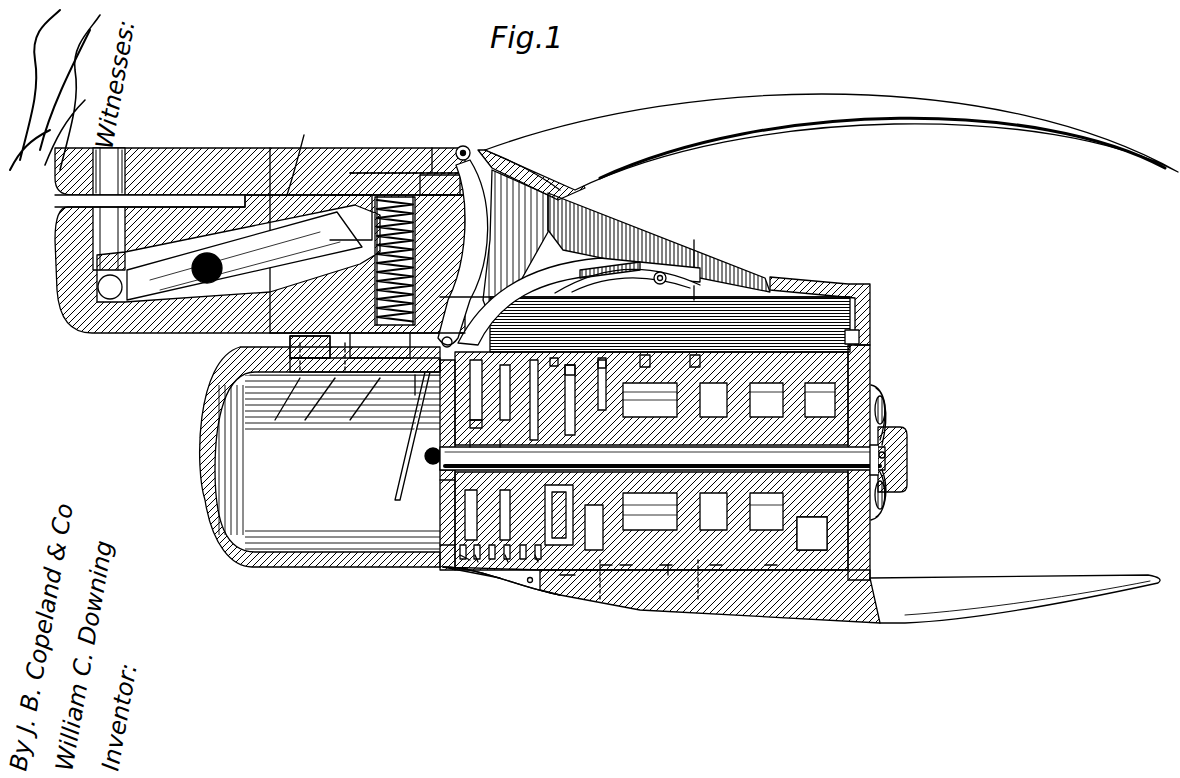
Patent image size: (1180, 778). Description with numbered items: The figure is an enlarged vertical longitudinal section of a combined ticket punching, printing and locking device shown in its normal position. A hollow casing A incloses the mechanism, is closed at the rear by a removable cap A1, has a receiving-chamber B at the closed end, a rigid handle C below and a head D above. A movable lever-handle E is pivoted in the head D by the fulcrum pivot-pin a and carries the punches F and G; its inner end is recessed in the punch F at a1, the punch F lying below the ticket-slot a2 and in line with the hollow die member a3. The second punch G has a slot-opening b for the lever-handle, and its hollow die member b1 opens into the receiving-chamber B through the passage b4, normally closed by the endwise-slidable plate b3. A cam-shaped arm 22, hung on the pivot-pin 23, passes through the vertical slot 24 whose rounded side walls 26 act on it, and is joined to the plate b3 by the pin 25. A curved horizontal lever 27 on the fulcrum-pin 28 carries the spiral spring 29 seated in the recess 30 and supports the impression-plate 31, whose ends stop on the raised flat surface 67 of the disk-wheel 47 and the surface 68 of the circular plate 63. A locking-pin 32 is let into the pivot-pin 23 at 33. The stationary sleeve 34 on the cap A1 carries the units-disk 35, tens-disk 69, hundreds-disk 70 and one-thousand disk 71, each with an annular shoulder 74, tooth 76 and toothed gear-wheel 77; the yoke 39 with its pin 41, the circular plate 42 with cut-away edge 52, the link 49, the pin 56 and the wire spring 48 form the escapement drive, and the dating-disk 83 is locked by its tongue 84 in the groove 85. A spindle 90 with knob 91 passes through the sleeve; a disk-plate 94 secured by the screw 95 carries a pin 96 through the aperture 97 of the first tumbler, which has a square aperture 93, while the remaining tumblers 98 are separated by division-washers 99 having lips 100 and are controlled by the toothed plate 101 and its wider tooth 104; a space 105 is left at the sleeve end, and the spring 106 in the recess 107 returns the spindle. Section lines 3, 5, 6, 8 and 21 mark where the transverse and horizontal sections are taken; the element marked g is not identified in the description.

The head D is at (210, 148).
The hollow die member a3 is at (108, 165).
The ticket-slot a2 is at (80, 201).
The punch F is at (108, 224).
The fulcrum pivot-pin a is at (205, 282).
The recess a1 is at (100, 288).
The spiral spring 29 is at (385, 197).
The recess 30 is at (350, 190).
The slot-opening b is at (304, 135).
The vertical slot 24 is at (445, 148).
The section line 21 is at (407, 158).
The fulcrum-pin 28 is at (375, 434).
The pivot-pin 23 is at (472, 150).
The side walls 26 is at (540, 152).
The cam-shaped arm 22 is at (480, 218).
The pin 25 is at (515, 244).
The aperture 97 is at (470, 329).
The lever-handle E is at (1005, 118).
The section line 6 is at (598, 300).
The section line 5 is at (694, 300).
The impression-plate 31 is at (740, 297).
The curved horizontal lever 27 is at (545, 268).
The cut-away edge 52 is at (598, 290).
The raised flat surface 67 is at (585, 260).
The hollow casing A is at (800, 285).
The removable cap A1 is at (872, 548).
The surface 68 is at (860, 335).
The second punch member G is at (285, 350).
The receiving-chamber B is at (345, 478).
The passage b4 is at (250, 372).
The passage g is at (282, 408).
The hollow die member b1 is at (315, 409).
The endwise-slidable plate b3 is at (355, 407).
The space 105 is at (445, 435).
The locking-pin 32 is at (397, 490).
The screw 95 is at (425, 458).
The square aperture 93 is at (440, 472).
The stationary sleeve 34 is at (440, 482).
The division-washers 99 is at (440, 542).
The groove 85 is at (710, 440).
The pin 96 is at (478, 360).
The let-in portion 33 is at (554, 358).
The pin 56 is at (570, 365).
The link 49 is at (603, 358).
The toothed gear-wheel 77 is at (645, 355).
The tooth 76 is at (697, 355).
The spindle 90 is at (908, 455).
The knob 91 is at (905, 435).
The recess 107 is at (878, 392).
The spring 106 is at (882, 498).
The tongue 84 is at (651, 521).
The dating-disk 83 is at (812, 535).
The wire spring 48 is at (559, 515).
The lip 100 is at (500, 440).
The circular plate 63 is at (835, 590).
The rigid handle C is at (1072, 585).
The disk-plate 94 is at (420, 567).
The wider tooth 104 is at (462, 565).
The tumblers 98 is at (478, 560).
The toothed plate 101 is at (522, 588).
The disk-wheel 47 is at (538, 565).
The circular plate 42 is at (570, 590).
The elongated yoke 39 is at (588, 590).
The pin 41 is at (608, 580).
The units-disk 35 is at (632, 590).
The tens-disk 69 is at (668, 590).
The hundreds-disk 70 is at (718, 590).
The one-thousand disk 71 is at (772, 590).
The section line 8 is at (600, 600).
The section line 3 is at (698, 600).
The annular shoulder 74 is at (685, 625).